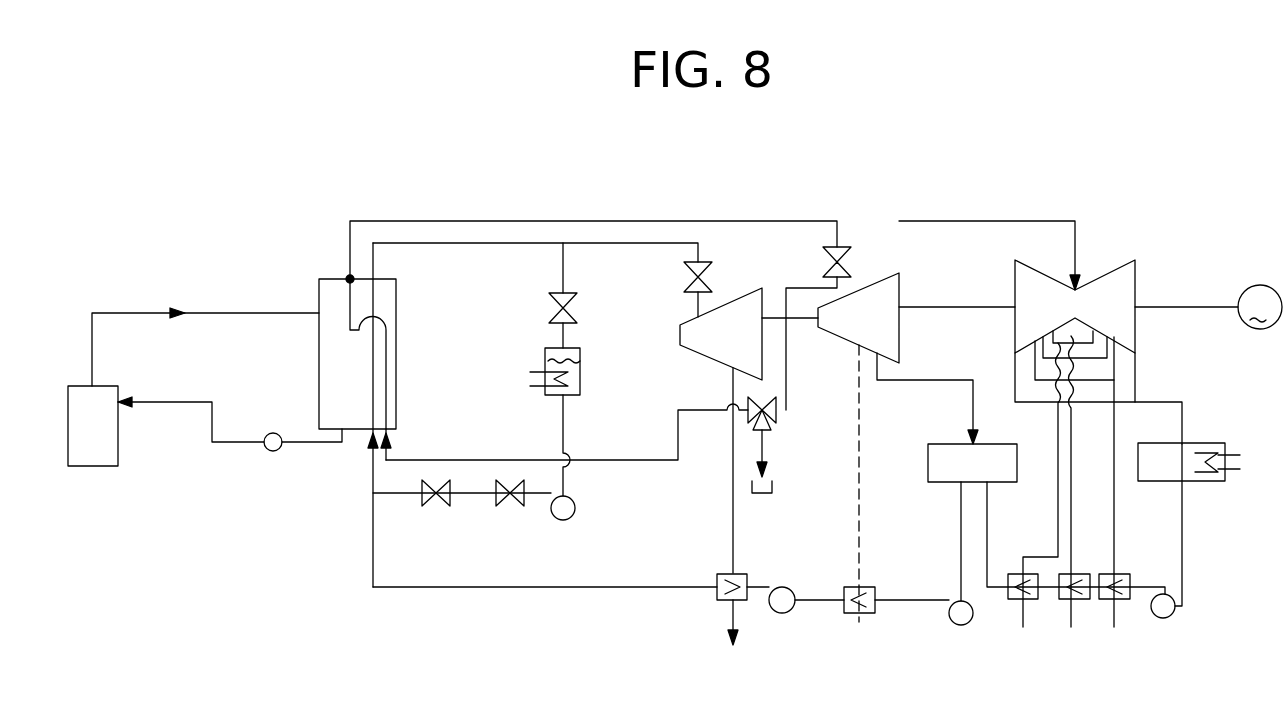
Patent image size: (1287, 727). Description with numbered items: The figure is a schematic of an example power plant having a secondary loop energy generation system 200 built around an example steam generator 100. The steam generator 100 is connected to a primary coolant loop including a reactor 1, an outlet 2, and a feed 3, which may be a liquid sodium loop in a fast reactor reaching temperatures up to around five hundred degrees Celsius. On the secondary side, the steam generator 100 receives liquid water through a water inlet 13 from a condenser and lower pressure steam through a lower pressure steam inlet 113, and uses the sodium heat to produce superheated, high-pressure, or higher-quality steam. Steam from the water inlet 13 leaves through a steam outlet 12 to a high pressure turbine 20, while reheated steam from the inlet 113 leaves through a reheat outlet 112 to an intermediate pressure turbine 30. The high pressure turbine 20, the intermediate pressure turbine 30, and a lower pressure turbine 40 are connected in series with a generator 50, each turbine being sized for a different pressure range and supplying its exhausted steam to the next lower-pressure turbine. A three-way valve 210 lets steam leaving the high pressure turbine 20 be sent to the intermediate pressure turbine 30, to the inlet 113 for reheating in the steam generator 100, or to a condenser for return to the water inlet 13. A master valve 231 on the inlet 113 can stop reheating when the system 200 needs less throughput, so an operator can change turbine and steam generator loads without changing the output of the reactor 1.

The reactor 1 is at (110, 466).
The outlet 2 is at (221, 313).
The feed 3 is at (232, 442).
The steam outlet 12 is at (373, 260).
The water inlet 13 is at (617, 587).
The high pressure turbine 20 is at (737, 305).
The intermediate pressure turbine 30 is at (885, 330).
The lower pressure turbine 40 is at (1113, 262).
The generator 50 is at (1258, 285).
The steam generator 100 is at (319, 283).
The reheat outlet 112 is at (350, 279).
The lower pressure steam inlet 113 is at (474, 460).
The secondary loop energy generation system 200 is at (1083, 141).
The three-way valve 210 is at (774, 412).
The master valve 231 is at (395, 440).